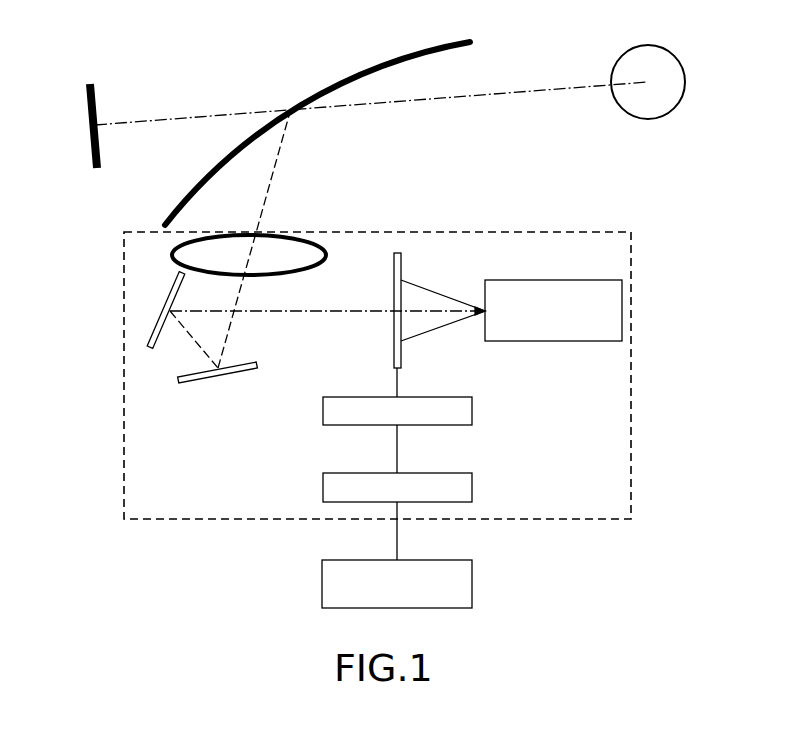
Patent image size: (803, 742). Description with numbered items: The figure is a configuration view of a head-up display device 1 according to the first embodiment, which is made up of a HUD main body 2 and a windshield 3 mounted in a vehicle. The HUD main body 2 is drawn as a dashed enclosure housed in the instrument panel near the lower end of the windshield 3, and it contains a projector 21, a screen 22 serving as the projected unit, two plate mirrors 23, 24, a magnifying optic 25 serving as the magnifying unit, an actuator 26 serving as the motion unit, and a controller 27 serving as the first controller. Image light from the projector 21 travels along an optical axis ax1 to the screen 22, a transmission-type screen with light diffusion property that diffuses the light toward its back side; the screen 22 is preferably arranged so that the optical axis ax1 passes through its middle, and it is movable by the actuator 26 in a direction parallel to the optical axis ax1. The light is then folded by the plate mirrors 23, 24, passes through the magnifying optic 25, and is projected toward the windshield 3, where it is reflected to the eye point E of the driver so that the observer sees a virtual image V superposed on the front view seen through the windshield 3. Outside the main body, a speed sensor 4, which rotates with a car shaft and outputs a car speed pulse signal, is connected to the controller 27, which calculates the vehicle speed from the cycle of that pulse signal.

The head-up display device 1 is at (700, 540).
The HUD main body 2 is at (614, 225).
The windshield 3 is at (355, 74).
The speed sensor 4 is at (448, 562).
The projector 21 is at (583, 282).
The screen 22 is at (401, 330).
The plate mirror 23 is at (158, 318).
The plate mirror 24 is at (198, 381).
The magnifying optic 25 is at (320, 240).
The actuator 26 is at (432, 398).
The controller 27 is at (433, 475).
The optical axis ax1 is at (340, 309).
The eye point E is at (676, 58).
The virtual image V is at (92, 126).